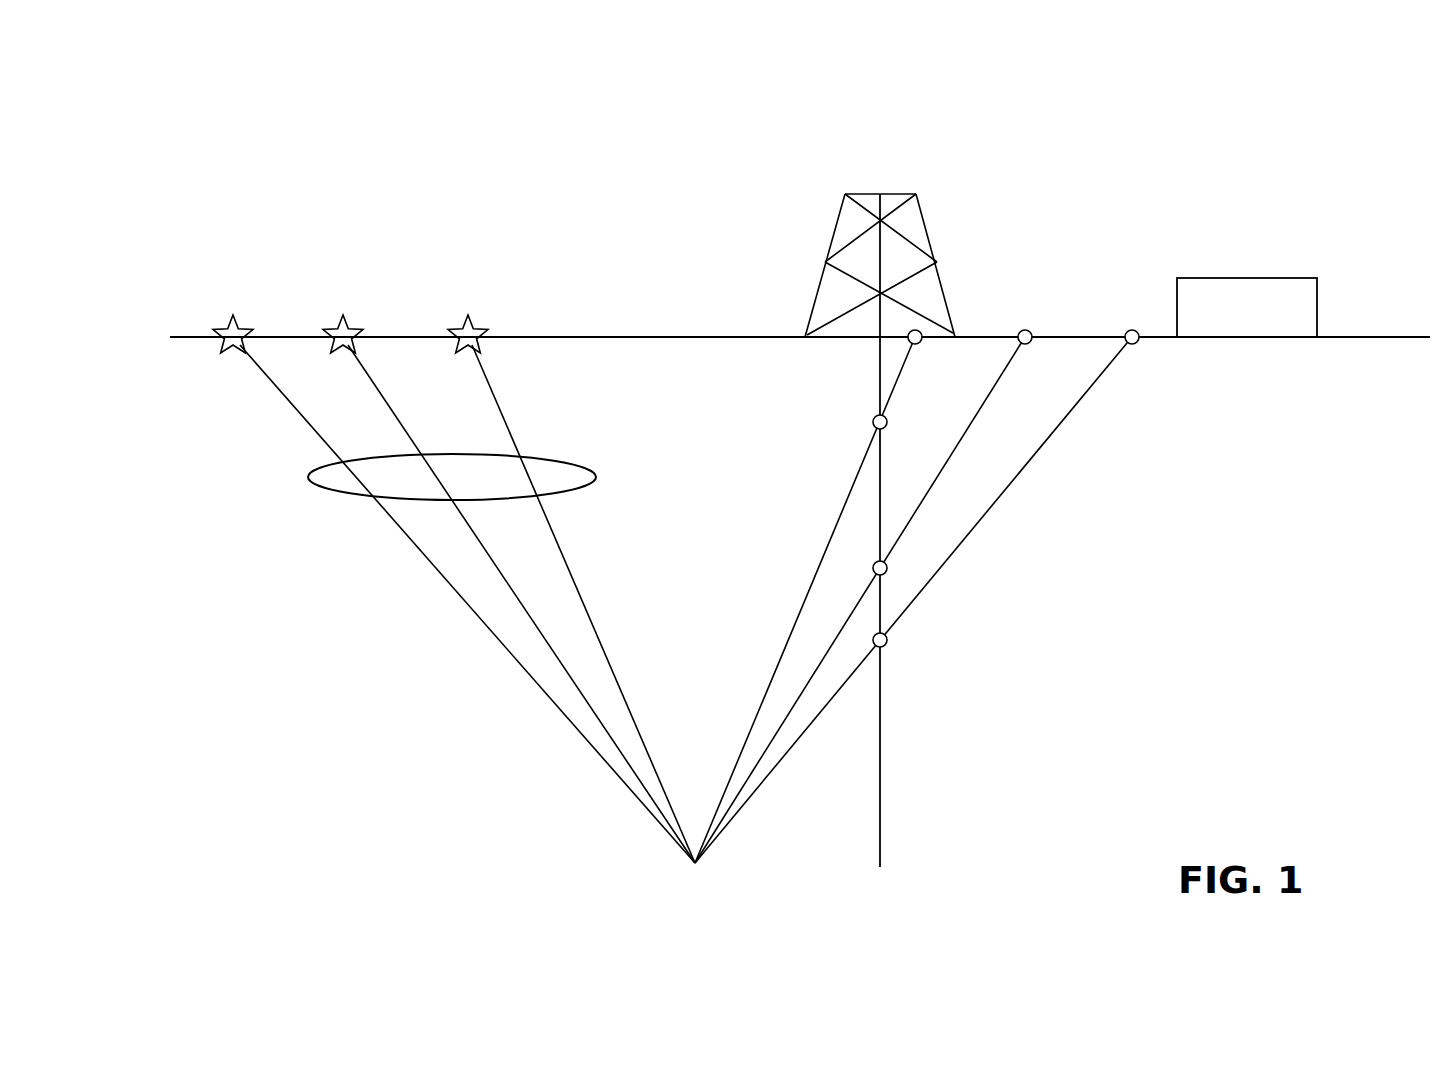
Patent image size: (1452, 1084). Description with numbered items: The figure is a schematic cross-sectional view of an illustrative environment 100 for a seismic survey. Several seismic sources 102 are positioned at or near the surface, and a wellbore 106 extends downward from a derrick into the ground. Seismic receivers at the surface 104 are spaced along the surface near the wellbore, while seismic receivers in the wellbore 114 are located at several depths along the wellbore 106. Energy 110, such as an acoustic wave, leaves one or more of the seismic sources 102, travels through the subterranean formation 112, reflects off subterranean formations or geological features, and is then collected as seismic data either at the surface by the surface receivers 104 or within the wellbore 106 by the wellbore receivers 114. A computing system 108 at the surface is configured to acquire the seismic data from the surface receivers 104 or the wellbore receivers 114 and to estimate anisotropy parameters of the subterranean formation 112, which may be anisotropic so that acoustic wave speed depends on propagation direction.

The environment 100 is at (1008, 130).
The seismic sources 102 is at (440, 328).
The seismic receivers at the surface 104 is at (1130, 328).
The wellbore 106 is at (885, 704).
The computing system 108 is at (1280, 320).
The energy 110 is at (308, 478).
The subterranean formation 112 is at (1232, 600).
The seismic receivers in the wellbore 114 is at (878, 632).